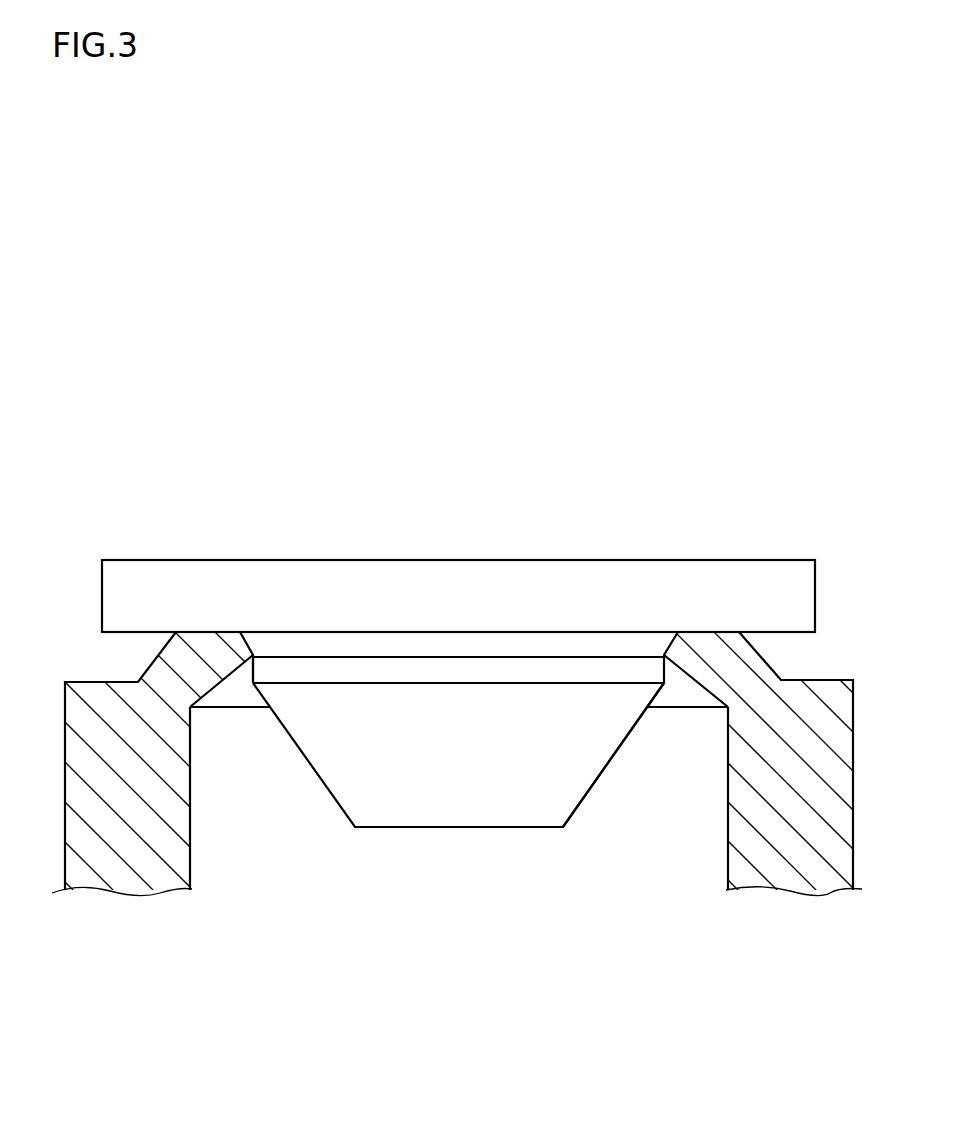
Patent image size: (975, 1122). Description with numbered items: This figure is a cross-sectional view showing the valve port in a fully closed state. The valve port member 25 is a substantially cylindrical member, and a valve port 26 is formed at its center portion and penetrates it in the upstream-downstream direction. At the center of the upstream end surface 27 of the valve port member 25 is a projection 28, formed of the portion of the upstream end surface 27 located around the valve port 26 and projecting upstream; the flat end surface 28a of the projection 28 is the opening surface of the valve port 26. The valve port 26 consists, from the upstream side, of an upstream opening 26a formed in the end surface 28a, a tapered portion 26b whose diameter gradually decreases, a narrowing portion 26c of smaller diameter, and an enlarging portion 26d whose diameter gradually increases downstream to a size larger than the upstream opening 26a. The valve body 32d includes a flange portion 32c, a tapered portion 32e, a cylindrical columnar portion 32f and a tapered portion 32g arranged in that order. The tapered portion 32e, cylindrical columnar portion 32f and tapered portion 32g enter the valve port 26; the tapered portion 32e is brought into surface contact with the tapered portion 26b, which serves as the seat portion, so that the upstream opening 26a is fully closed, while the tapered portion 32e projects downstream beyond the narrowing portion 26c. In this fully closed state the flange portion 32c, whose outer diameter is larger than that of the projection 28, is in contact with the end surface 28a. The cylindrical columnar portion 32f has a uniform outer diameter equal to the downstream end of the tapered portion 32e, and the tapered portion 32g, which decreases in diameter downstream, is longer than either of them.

The valve port member 25 is at (100, 888).
The valve port 26 is at (458, 596).
The upstream opening 26a is at (455, 632).
The tapered portion 26b is at (240, 634).
The narrowing portion 26c is at (251, 659).
The enlarging portion 26d is at (222, 684).
The upstream end surface 27 is at (90, 683).
The projection 28 is at (750, 664).
The end surface 28a is at (207, 631).
The flange portion 32c is at (711, 573).
The valve body 32d is at (442, 768).
The tapered portion 32e is at (712, 694).
The cylindrical columnar portion 32f is at (665, 676).
The tapered portion 32g is at (600, 776).